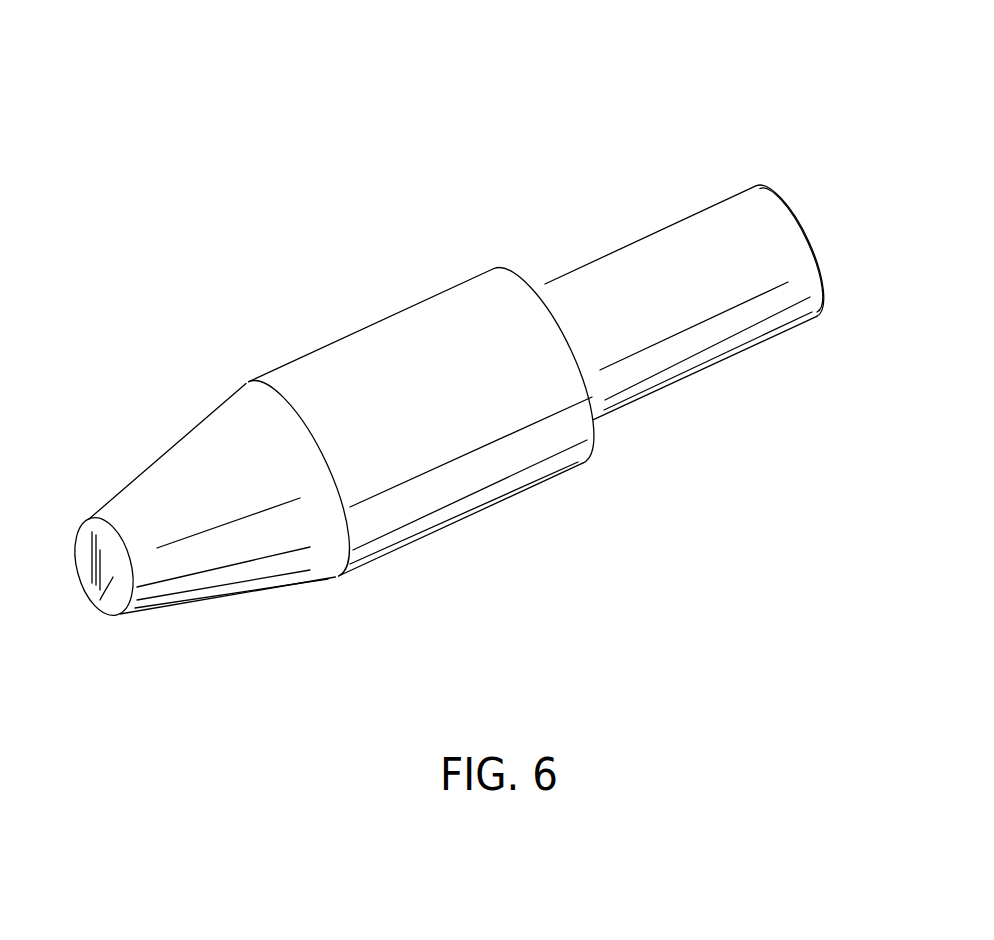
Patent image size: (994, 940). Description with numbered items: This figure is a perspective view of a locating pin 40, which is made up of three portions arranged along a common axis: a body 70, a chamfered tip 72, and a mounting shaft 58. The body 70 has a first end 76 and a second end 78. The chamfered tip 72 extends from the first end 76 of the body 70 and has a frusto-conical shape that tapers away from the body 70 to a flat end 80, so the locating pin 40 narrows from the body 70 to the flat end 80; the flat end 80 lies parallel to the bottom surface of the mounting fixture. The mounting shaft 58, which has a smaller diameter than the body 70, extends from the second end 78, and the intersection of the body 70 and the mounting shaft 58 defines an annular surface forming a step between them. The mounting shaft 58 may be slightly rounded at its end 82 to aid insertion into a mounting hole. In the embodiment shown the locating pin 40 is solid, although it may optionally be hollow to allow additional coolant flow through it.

The locating pin 40 is at (421, 133).
The mounting shaft 58 is at (740, 140).
The body 70 is at (493, 252).
The chamfered tip 72 is at (235, 377).
The first end 76 is at (337, 574).
The second end 78 is at (588, 462).
The flat end 80 is at (101, 608).
The end 82 is at (783, 193).